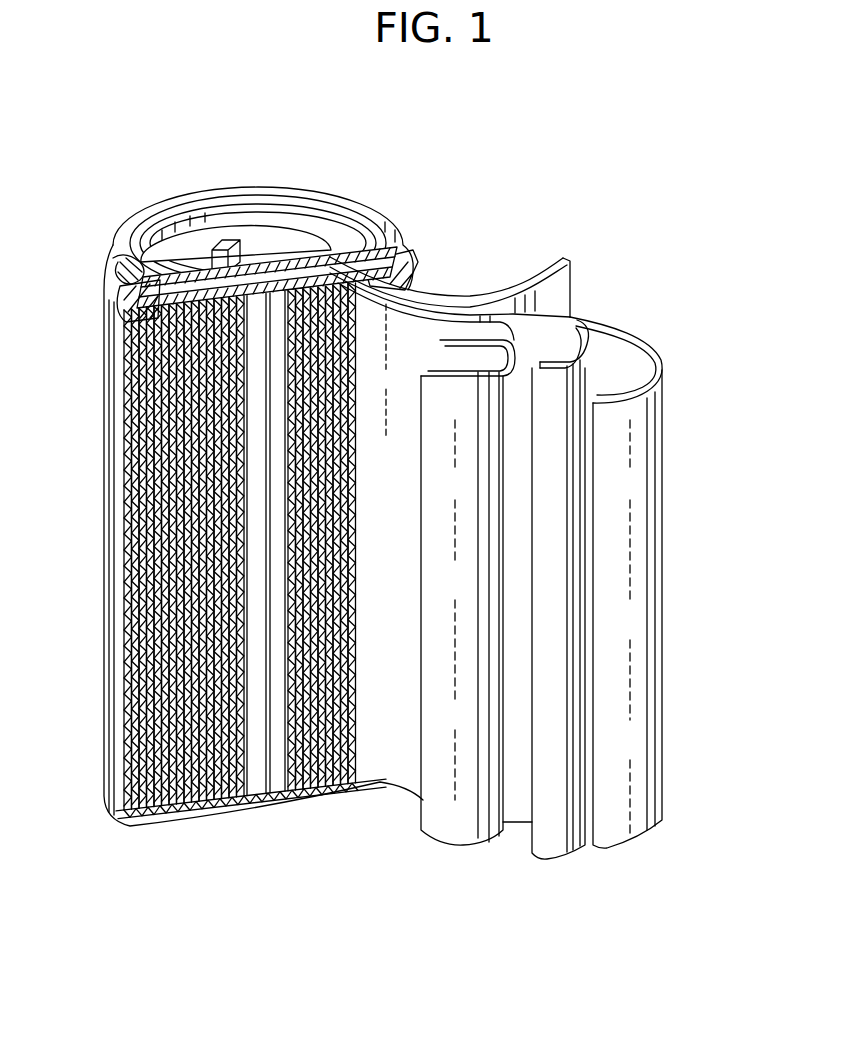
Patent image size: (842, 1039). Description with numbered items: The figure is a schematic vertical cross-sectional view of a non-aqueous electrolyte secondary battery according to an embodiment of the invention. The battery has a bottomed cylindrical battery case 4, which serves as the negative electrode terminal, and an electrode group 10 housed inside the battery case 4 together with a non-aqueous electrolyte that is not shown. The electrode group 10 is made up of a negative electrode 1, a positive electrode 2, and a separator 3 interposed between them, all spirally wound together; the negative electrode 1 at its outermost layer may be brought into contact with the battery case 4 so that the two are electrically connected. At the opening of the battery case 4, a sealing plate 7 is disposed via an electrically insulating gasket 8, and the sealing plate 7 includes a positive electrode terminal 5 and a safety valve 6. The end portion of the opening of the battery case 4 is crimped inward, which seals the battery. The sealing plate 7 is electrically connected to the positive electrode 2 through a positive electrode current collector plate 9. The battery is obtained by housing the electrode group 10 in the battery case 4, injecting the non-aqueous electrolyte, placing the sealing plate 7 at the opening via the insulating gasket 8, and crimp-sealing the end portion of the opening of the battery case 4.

The negative electrode 1 is at (651, 488).
The positive electrode 2 is at (490, 726).
The separator 3 is at (568, 598).
The battery case 4 is at (108, 597).
The positive electrode terminal 5 is at (263, 232).
The safety valve 6 is at (242, 267).
The sealing plate 7 is at (367, 243).
The insulating gasket 8 is at (130, 268).
The positive electrode current collector plate 9 is at (126, 312).
The electrode group 10 is at (436, 558).